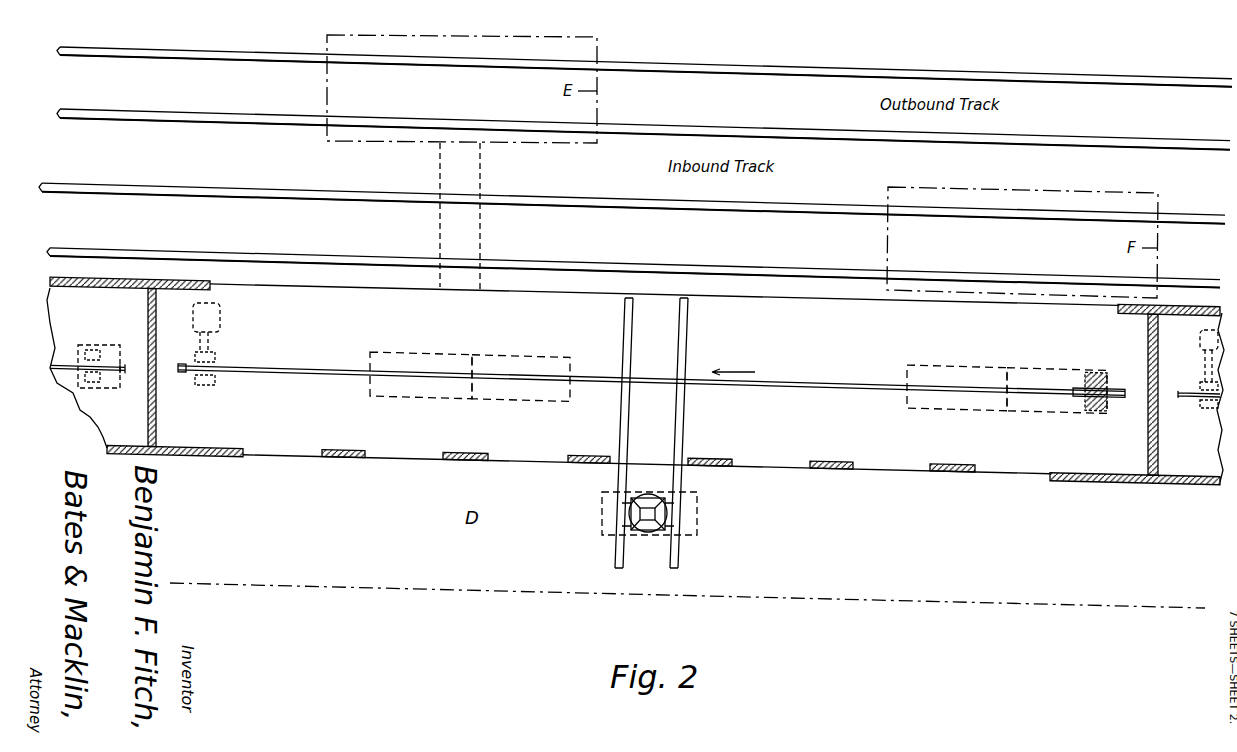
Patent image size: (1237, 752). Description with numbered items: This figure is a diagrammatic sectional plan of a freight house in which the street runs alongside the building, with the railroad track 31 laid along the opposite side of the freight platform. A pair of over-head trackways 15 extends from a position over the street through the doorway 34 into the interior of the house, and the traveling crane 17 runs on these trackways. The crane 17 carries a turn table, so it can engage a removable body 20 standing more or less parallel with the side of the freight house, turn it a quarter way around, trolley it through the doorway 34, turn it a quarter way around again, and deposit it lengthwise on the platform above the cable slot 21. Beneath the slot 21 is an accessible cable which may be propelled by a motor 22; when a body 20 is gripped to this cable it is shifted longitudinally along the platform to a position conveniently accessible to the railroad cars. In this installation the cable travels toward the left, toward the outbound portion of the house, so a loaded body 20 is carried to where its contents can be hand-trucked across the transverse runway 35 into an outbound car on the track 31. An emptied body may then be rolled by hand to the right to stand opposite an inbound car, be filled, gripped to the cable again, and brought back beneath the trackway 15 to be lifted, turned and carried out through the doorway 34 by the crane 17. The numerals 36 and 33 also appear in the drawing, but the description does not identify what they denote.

The railroad track 31 is at (635, 166).
The transverse runway 35 is at (483, 219).
The pit 36 is at (637, 381).
The pit end wall 33 is at (77, 369).
The cable slot 21 is at (52, 362).
The motor 22 is at (212, 322).
The removable body 20 is at (528, 353).
The over-head trackway 15 is at (632, 431).
The doorway 34 is at (690, 462).
The traveling crane 17 is at (653, 535).